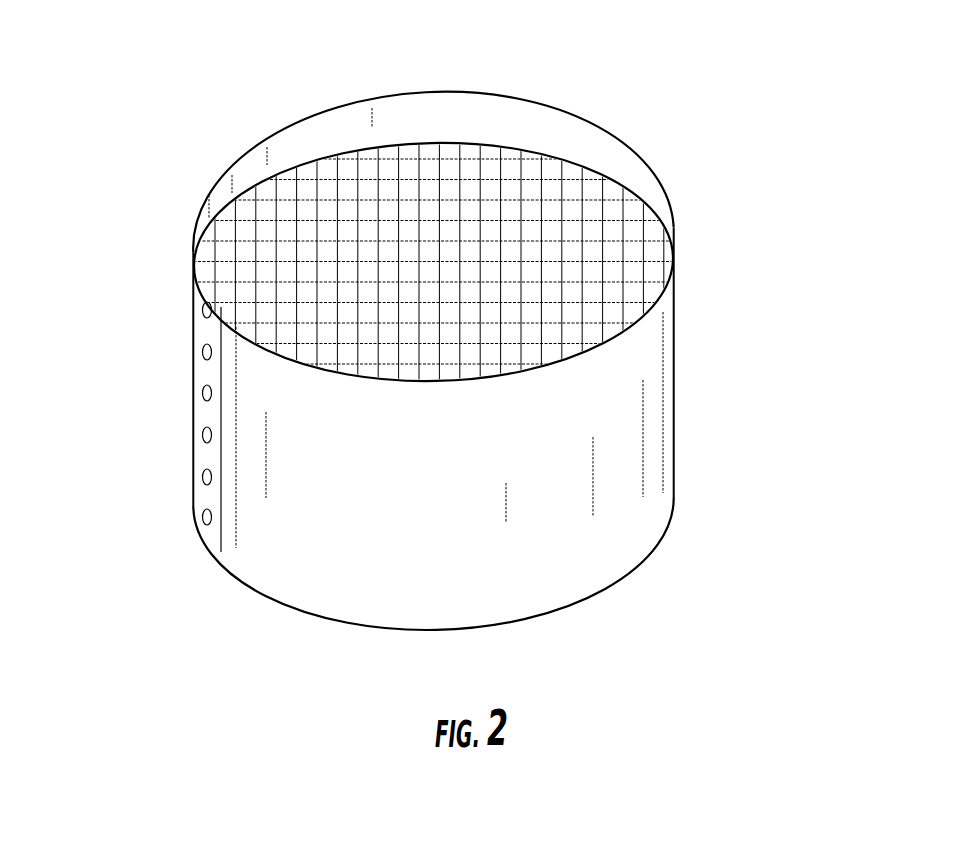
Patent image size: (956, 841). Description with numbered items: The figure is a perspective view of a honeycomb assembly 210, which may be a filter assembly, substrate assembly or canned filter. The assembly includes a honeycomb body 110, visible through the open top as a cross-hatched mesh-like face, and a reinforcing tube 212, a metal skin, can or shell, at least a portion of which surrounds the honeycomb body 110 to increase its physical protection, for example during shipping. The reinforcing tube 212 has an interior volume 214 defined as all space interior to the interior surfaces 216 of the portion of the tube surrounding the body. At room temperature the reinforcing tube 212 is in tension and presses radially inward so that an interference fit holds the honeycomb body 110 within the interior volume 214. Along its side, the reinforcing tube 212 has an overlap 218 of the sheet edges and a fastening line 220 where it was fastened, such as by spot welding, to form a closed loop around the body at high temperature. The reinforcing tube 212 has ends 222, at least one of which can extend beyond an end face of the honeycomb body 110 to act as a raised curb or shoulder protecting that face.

The honeycomb body 110 is at (440, 198).
The honeycomb assembly 210 is at (130, 183).
The reinforcing tube 212 is at (540, 448).
The interior volume 214 is at (295, 130).
The interior surfaces 216 is at (610, 168).
The overlap 218 is at (195, 285).
The fastening line 220 is at (207, 413).
The ends 222 is at (388, 92).